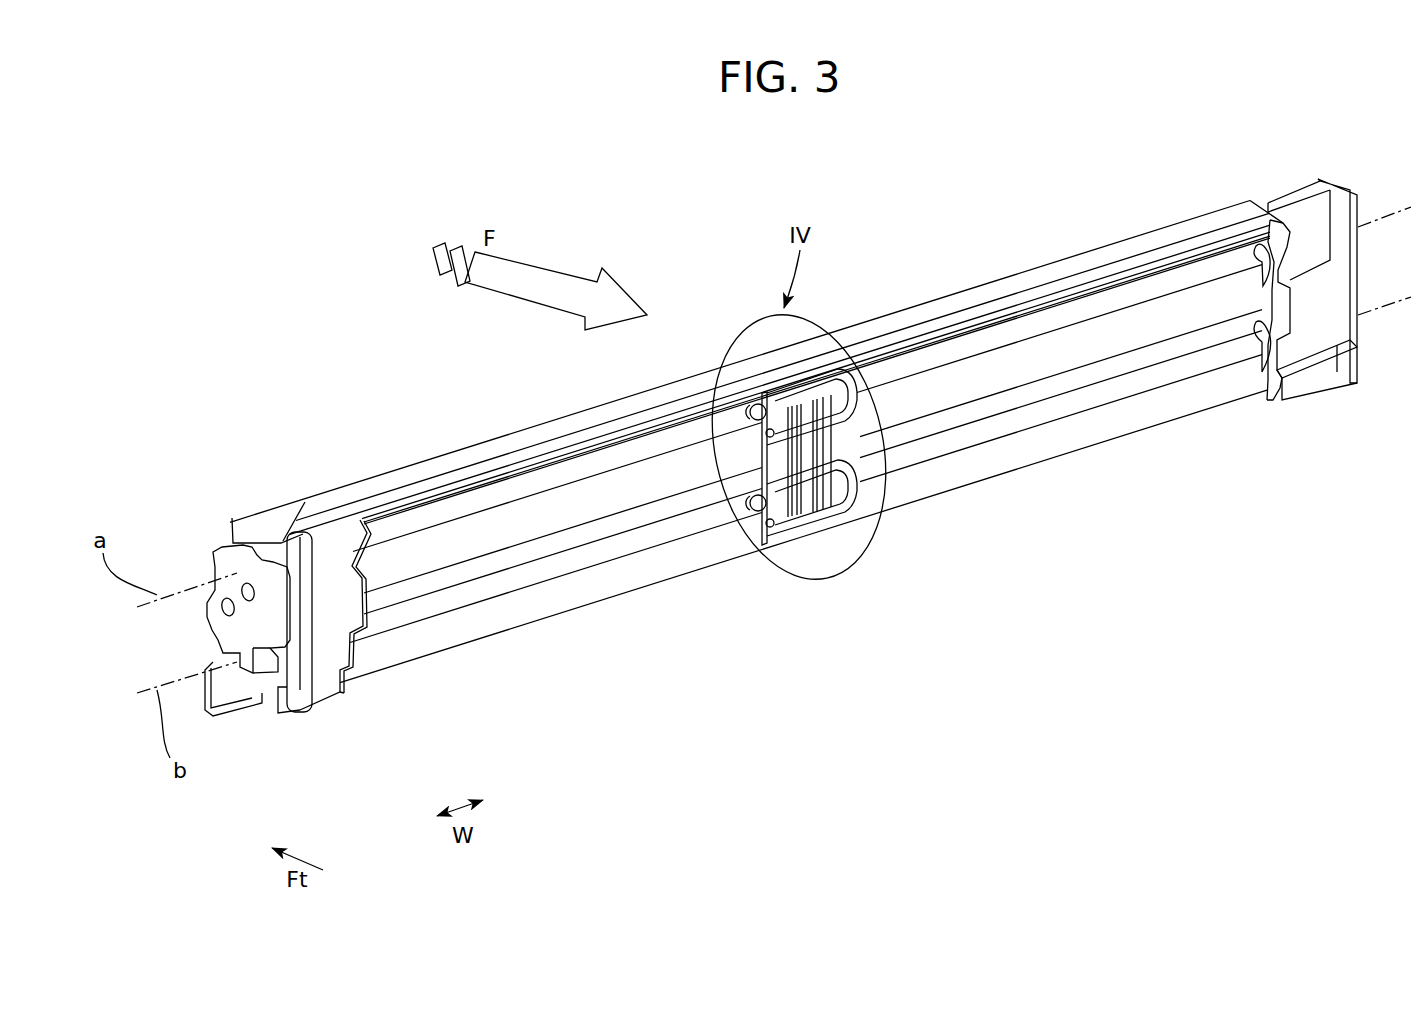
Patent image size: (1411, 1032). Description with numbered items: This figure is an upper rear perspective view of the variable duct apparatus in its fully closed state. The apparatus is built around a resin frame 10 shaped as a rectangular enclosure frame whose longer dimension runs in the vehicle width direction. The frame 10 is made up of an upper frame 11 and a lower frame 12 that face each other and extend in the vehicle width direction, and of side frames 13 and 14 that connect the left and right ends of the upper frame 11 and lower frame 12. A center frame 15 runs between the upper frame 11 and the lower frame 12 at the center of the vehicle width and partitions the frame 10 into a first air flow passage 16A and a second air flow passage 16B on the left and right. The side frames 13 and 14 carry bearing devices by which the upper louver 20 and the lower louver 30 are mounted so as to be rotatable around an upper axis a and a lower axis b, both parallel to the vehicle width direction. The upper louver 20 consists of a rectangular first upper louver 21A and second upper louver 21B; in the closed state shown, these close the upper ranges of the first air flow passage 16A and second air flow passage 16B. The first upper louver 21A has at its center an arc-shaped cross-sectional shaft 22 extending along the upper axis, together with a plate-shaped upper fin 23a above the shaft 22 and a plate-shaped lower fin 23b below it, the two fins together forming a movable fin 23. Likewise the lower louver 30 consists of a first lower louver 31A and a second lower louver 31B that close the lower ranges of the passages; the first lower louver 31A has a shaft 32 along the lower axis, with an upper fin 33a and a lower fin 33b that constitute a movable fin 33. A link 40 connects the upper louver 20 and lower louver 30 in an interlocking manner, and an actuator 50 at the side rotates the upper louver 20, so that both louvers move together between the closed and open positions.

The frame 10 is at (350, 478).
The upper frame 11 is at (407, 470).
The lower frame 12 is at (373, 673).
The side frame 13 is at (290, 673).
The side frame 14 is at (1312, 325).
The center frame 15 is at (800, 388).
The first air flow passage 16A is at (636, 570).
The second air flow passage 16B is at (1152, 420).
The upper louver 20 is at (697, 436).
The first upper louver 21A is at (461, 508).
The second upper louver 21B is at (898, 333).
The shaft 22 is at (640, 452).
The movable fin 23 is at (588, 368).
The upper fin 23a is at (517, 470).
The lower fin 23b is at (582, 497).
The lower louver 30 is at (692, 529).
The first lower louver 31A is at (406, 620).
The second lower louver 31B is at (904, 460).
The shaft 32 is at (446, 597).
The movable fin 33 is at (660, 725).
The upper fin 33a is at (522, 554).
The lower fin 33b is at (596, 592).
The link 40 is at (797, 545).
The actuator 50 is at (228, 625).